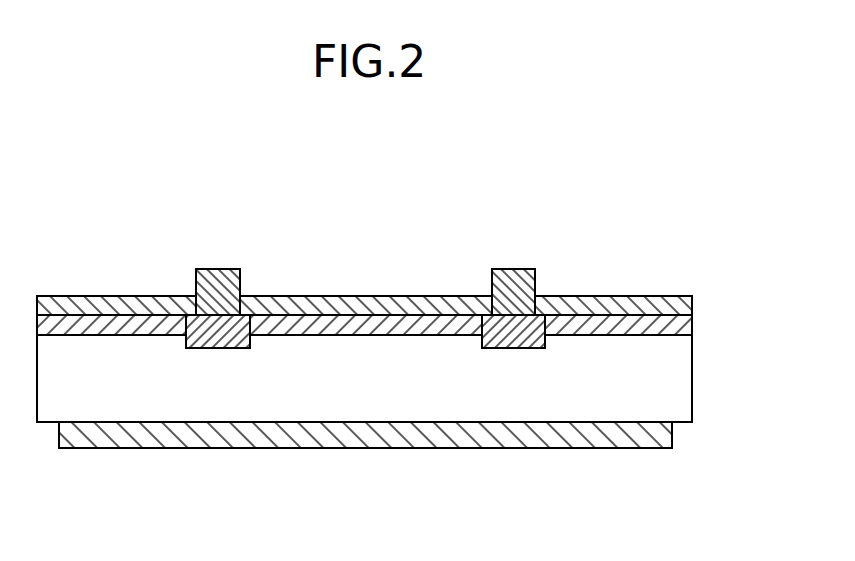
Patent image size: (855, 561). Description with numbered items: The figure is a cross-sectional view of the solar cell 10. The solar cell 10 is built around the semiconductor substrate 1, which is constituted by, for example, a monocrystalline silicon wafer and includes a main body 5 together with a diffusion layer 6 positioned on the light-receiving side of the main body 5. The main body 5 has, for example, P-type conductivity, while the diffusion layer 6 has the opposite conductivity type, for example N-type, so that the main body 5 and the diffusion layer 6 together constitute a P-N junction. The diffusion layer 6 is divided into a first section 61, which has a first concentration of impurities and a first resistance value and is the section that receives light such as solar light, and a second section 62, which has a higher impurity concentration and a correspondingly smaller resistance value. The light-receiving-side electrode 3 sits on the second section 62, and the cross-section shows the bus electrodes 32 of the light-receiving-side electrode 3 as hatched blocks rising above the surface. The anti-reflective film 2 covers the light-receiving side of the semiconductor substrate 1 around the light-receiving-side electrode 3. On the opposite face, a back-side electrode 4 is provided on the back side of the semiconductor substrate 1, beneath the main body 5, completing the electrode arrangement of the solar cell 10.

The solar cell 10 is at (460, 213).
The semiconductor substrate 1 is at (763, 313).
The anti-reflective film 2 is at (666, 304).
The light-receiving-side electrode 3 is at (216, 278).
The bus electrode 32 is at (365, 292).
The back-side electrode 4 is at (434, 446).
The main body 5 is at (687, 369).
The diffusion layer 6 is at (686, 322).
The first section 61 is at (108, 325).
The second section 62 is at (247, 322).